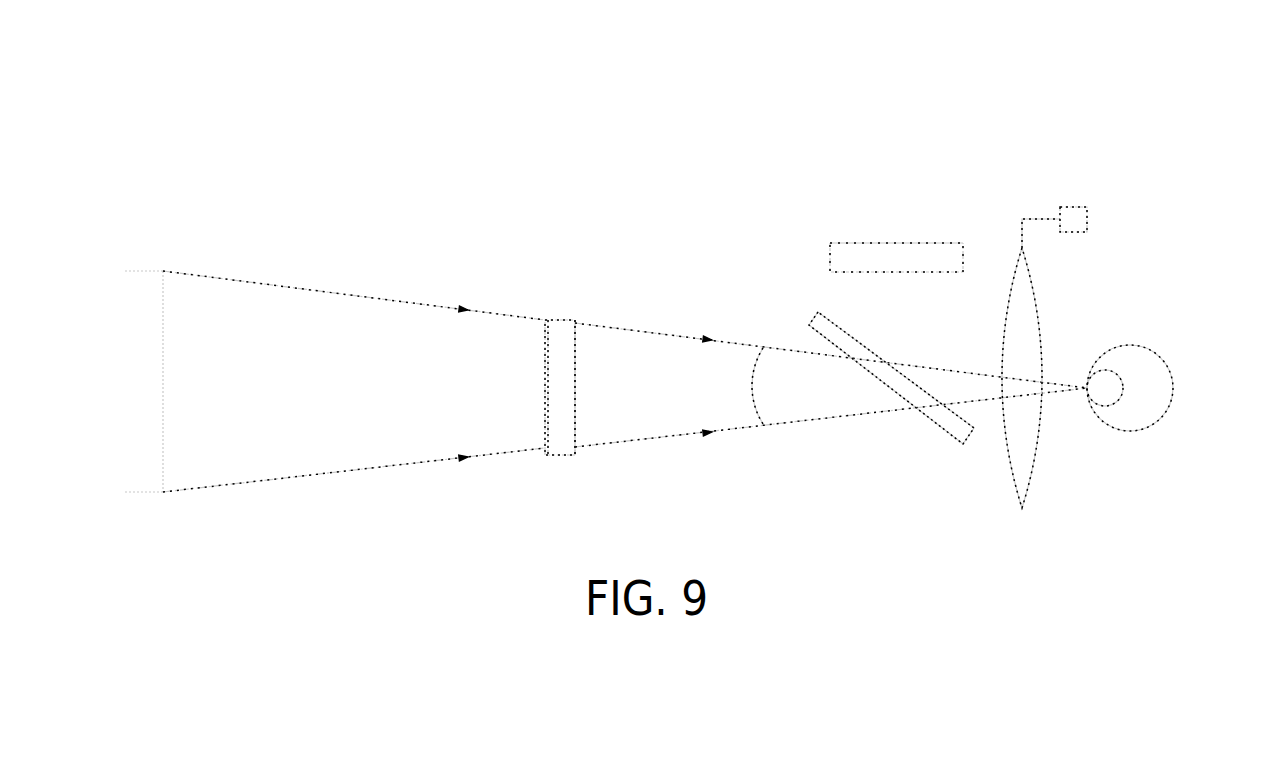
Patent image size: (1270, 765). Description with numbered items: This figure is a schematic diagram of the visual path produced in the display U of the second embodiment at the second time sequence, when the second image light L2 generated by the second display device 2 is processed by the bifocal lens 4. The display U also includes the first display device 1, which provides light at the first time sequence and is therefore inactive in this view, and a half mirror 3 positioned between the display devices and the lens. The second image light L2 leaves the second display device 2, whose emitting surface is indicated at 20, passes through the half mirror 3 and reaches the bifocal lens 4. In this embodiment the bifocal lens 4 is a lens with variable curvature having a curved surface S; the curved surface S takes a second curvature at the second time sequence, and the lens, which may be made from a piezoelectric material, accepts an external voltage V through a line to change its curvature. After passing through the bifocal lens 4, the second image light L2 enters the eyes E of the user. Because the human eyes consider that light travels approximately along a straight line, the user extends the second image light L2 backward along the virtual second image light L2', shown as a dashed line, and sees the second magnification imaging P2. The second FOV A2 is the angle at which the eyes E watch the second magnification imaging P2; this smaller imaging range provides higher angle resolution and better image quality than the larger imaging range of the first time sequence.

The display U is at (606, 52).
The second magnification imaging P2 is at (133, 270).
The virtual second image light L2' is at (354, 383).
The second display device 2 is at (560, 320).
The display surface 20 is at (577, 413).
The second image light L2 is at (831, 388).
The second FOV A2 is at (740, 386).
The first display device 1 is at (910, 243).
The curved surface S is at (1010, 268).
The external voltage V is at (1087, 215).
The half mirror 3 is at (972, 437).
The bifocal lens 4 is at (1037, 455).
The eyes E is at (1157, 347).